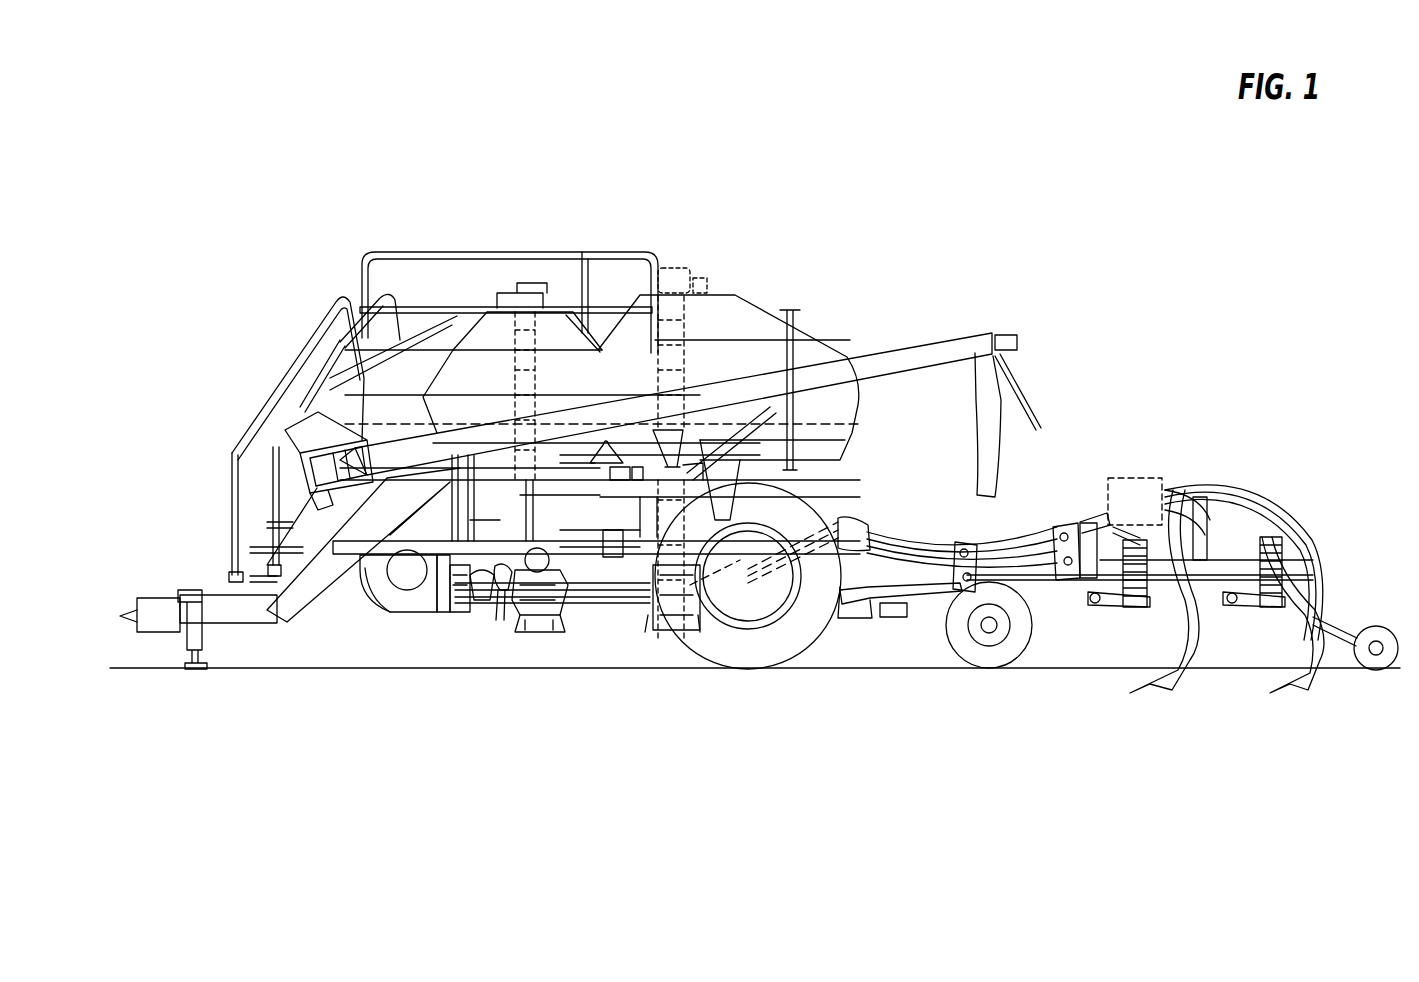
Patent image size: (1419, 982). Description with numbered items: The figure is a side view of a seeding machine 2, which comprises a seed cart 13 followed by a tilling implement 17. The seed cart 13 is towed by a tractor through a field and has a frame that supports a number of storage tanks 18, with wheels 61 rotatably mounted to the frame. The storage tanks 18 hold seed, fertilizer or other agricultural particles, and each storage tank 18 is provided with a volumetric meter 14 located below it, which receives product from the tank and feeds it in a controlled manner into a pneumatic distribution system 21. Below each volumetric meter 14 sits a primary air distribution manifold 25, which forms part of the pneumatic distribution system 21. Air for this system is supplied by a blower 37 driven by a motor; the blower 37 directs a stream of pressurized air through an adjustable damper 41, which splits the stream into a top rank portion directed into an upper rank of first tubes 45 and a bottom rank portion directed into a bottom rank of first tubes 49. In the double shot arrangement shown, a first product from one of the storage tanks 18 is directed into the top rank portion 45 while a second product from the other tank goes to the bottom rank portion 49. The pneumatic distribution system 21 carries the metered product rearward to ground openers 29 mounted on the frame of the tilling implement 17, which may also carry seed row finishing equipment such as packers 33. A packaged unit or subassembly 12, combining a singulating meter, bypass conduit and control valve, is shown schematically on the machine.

The seeding machine 2 is at (1058, 298).
The seed cart 13 is at (870, 340).
The tilling implement 17 is at (1262, 412).
The storage tanks 18 is at (495, 383).
The packaged unit or subassembly 12 is at (1146, 514).
The blower 37 is at (368, 583).
The adjustable damper 41 is at (447, 607).
The upper rank of first tubes 45 is at (476, 583).
The bottom rank of first tubes 49 is at (502, 572).
The primary air distribution manifold 25 is at (522, 612).
The volumetric meter 14 is at (648, 572).
The wheels 61 is at (782, 655).
The pneumatic distribution system 21 is at (365, 620).
The ground openers 29 is at (1155, 695).
The packers 33 is at (1380, 627).